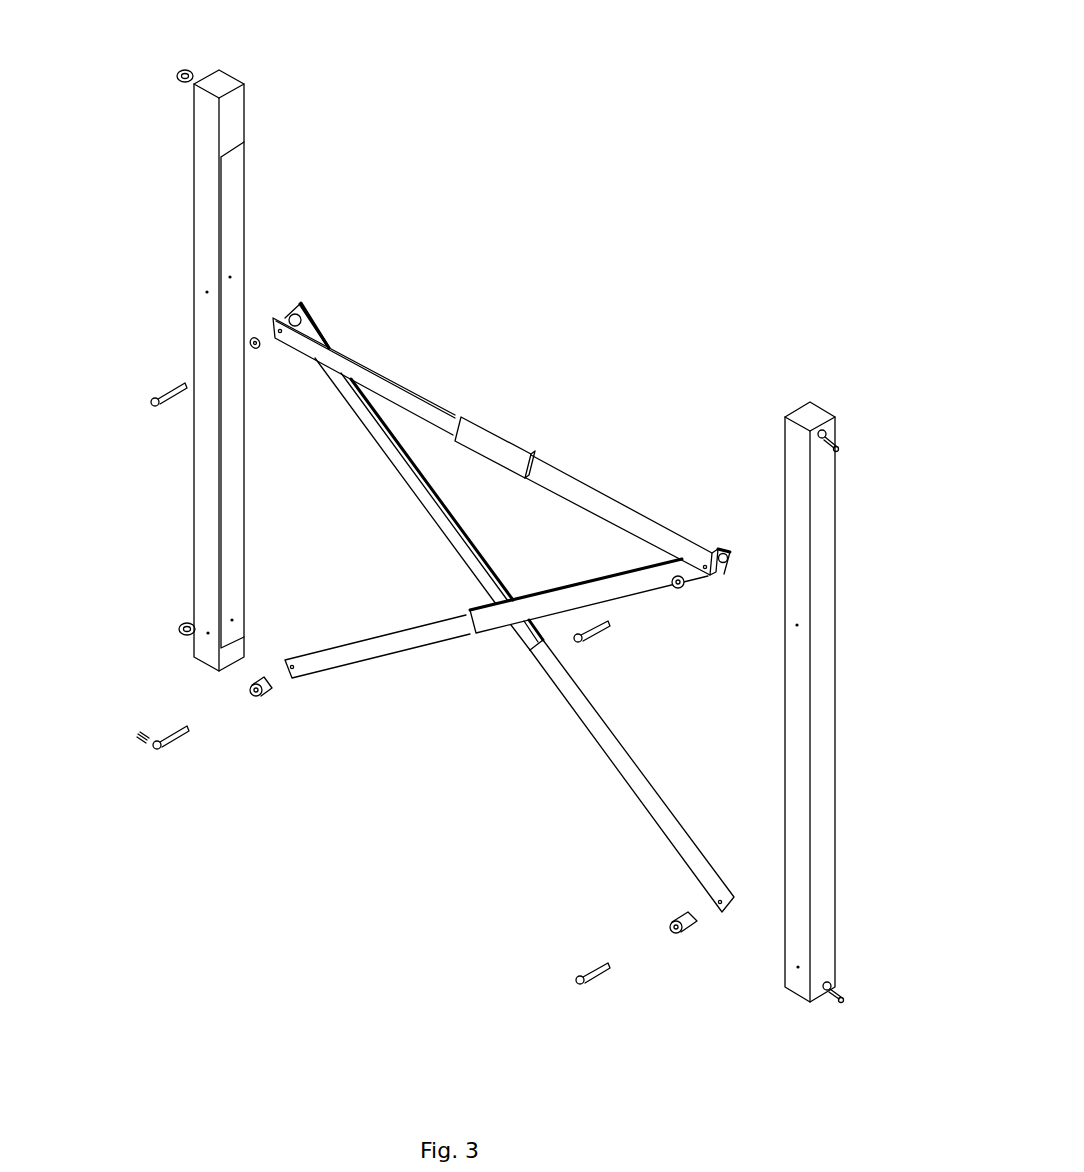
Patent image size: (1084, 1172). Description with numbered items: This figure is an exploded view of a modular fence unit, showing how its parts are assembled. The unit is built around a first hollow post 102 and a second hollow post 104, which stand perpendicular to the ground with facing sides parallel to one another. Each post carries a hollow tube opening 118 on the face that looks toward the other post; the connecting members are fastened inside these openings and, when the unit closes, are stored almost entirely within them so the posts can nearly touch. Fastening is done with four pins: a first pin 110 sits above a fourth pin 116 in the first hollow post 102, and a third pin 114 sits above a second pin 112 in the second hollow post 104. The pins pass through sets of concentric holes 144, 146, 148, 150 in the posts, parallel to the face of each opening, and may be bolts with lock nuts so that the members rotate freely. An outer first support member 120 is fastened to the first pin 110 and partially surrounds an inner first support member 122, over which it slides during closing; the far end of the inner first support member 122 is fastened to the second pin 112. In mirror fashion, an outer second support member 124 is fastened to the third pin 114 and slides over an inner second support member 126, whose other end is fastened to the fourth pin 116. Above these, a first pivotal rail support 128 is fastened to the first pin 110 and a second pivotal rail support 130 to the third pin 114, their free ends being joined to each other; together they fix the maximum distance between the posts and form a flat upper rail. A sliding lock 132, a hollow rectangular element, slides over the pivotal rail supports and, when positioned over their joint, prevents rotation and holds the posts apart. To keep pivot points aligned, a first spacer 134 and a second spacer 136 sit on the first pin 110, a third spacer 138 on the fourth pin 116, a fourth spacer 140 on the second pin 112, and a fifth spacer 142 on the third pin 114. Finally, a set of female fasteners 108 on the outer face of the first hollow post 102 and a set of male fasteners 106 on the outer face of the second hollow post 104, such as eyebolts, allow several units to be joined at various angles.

The first hollow post 102 is at (202, 187).
The second hollow post 104 is at (832, 578).
The set of male fasteners 106 is at (838, 441).
The set of female fasteners 108 is at (178, 74).
The first pin 110 is at (170, 387).
The second pin 112 is at (582, 985).
The third pin 114 is at (592, 632).
The fourth pin 116 is at (140, 735).
The hollow tube opening 118 is at (235, 208).
The outer first support member 120 is at (425, 507).
The inner first support member 122 is at (640, 798).
The outer second support member 124 is at (623, 587).
The inner second support member 126 is at (378, 651).
The first pivotal rail support 128 is at (388, 390).
The second pivotal rail support 130 is at (563, 483).
The sliding lock 132 is at (483, 444).
The first spacer 134 is at (300, 306).
The second spacer 136 is at (258, 350).
The third spacer 138 is at (270, 690).
The fourth spacer 140 is at (682, 922).
The fifth spacer 142 is at (682, 588).
The set of concentric holes 144 is at (230, 277).
The set of concentric holes 146 is at (798, 967).
The set of concentric holes 148 is at (797, 625).
The set of concentric holes 150 is at (208, 633).